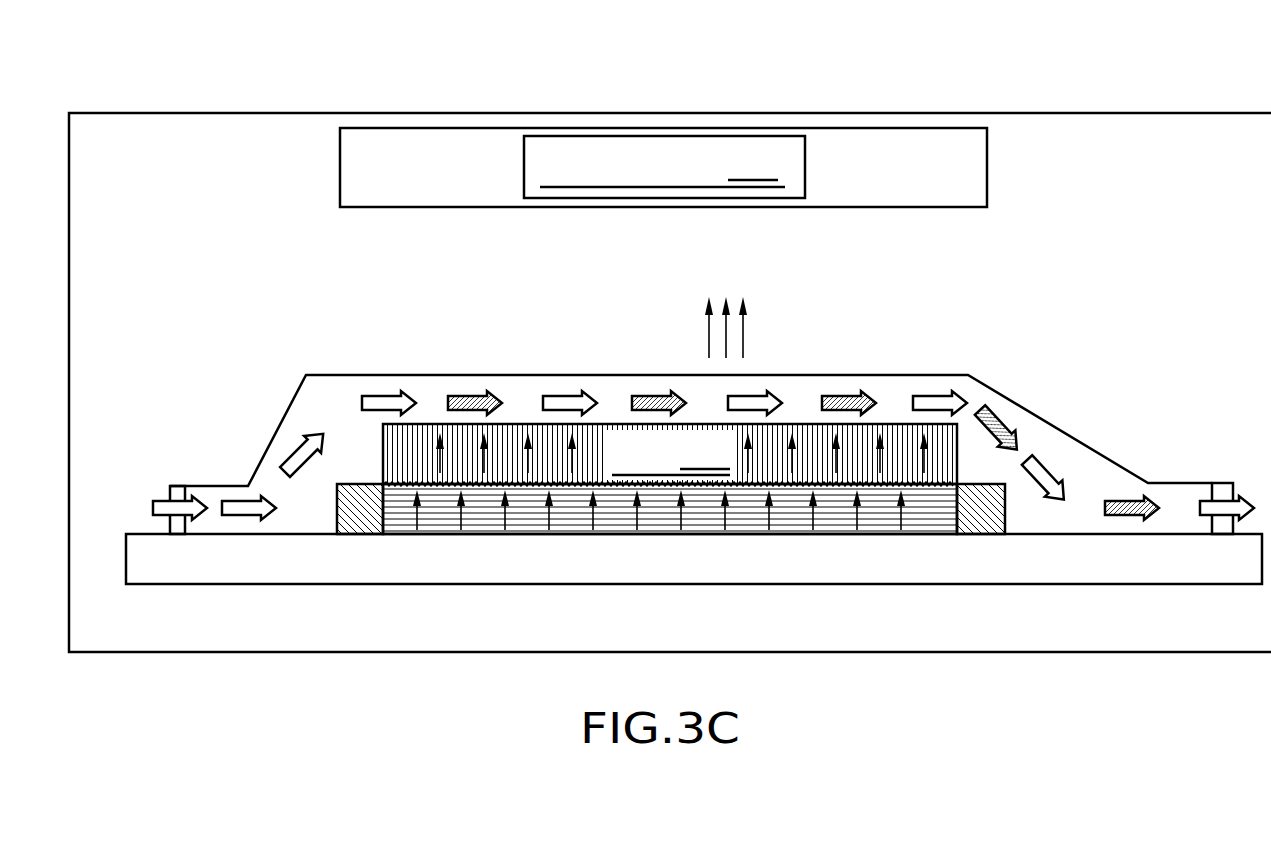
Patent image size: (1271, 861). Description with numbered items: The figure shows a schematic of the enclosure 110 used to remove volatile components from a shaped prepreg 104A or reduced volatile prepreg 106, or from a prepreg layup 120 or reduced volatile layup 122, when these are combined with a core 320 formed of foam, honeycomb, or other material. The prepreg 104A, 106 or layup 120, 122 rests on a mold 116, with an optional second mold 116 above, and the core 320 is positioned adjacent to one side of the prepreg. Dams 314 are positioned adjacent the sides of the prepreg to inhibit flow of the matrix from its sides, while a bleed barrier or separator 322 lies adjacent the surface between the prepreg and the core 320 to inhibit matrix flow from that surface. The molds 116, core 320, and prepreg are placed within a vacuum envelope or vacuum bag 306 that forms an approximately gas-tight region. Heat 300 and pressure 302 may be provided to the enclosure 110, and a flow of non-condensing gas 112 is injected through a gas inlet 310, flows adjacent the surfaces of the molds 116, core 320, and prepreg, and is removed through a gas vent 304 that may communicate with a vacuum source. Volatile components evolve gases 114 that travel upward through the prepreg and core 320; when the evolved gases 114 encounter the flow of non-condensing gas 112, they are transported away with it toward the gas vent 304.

The enclosure 110 is at (105, 113).
The mold 116 is at (588, 584).
The heat 300 is at (112, 182).
The pressure 302 is at (745, 315).
The vacuum envelope or vacuum bag 306 is at (895, 375).
The gas inlet 310 is at (177, 492).
The gas vent 304 is at (1223, 497).
The flow of non-condensing gas 112 is at (157, 507).
The evolved gases 114 is at (432, 423).
The bleed barrier or separator 322 is at (500, 483).
The core 320 is at (670, 454).
The dam 314 is at (362, 515).
The shaped prepreg 104A is at (731, 610).
The reduced volatile prepreg 106 is at (731, 610).
The prepreg layup 120 is at (731, 610).
The reduced volatile layup 122 is at (880, 512).